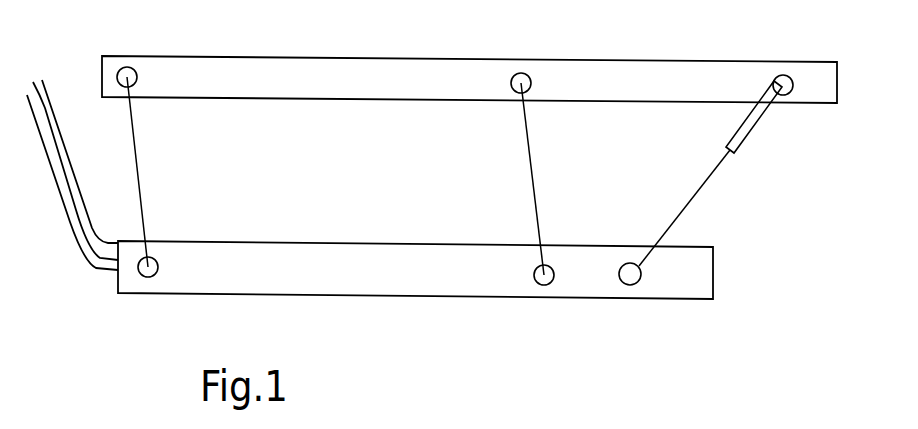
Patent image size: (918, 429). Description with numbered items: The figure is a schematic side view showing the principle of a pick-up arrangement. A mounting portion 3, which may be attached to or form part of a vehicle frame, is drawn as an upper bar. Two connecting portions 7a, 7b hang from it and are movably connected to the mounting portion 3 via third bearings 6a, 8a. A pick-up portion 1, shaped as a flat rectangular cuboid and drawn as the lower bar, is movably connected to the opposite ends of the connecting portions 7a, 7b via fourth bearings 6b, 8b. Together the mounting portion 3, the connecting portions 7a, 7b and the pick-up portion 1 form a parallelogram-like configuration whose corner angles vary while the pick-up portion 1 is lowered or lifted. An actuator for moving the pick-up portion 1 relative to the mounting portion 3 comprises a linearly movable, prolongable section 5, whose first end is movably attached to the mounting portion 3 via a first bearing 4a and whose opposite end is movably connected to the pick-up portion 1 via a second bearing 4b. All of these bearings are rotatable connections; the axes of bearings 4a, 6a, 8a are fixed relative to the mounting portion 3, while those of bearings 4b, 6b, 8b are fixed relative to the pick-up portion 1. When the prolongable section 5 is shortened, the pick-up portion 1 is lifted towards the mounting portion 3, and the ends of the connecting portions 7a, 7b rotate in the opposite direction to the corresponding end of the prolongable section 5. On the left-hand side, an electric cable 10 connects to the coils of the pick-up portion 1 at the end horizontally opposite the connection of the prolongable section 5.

The pick-up portion 1 is at (382, 298).
The mounting portion 3 is at (390, 63).
The first bearing 4a is at (782, 78).
The second bearing 4b is at (634, 281).
The prolongable section 5 is at (700, 190).
The third bearing 6a is at (525, 77).
The fourth bearing 6b is at (542, 288).
The connecting portion 7a is at (533, 183).
The connecting portion 7b is at (138, 177).
The third bearing 8a is at (133, 68).
The fourth bearing 8b is at (152, 272).
The electric cable 10 is at (73, 223).